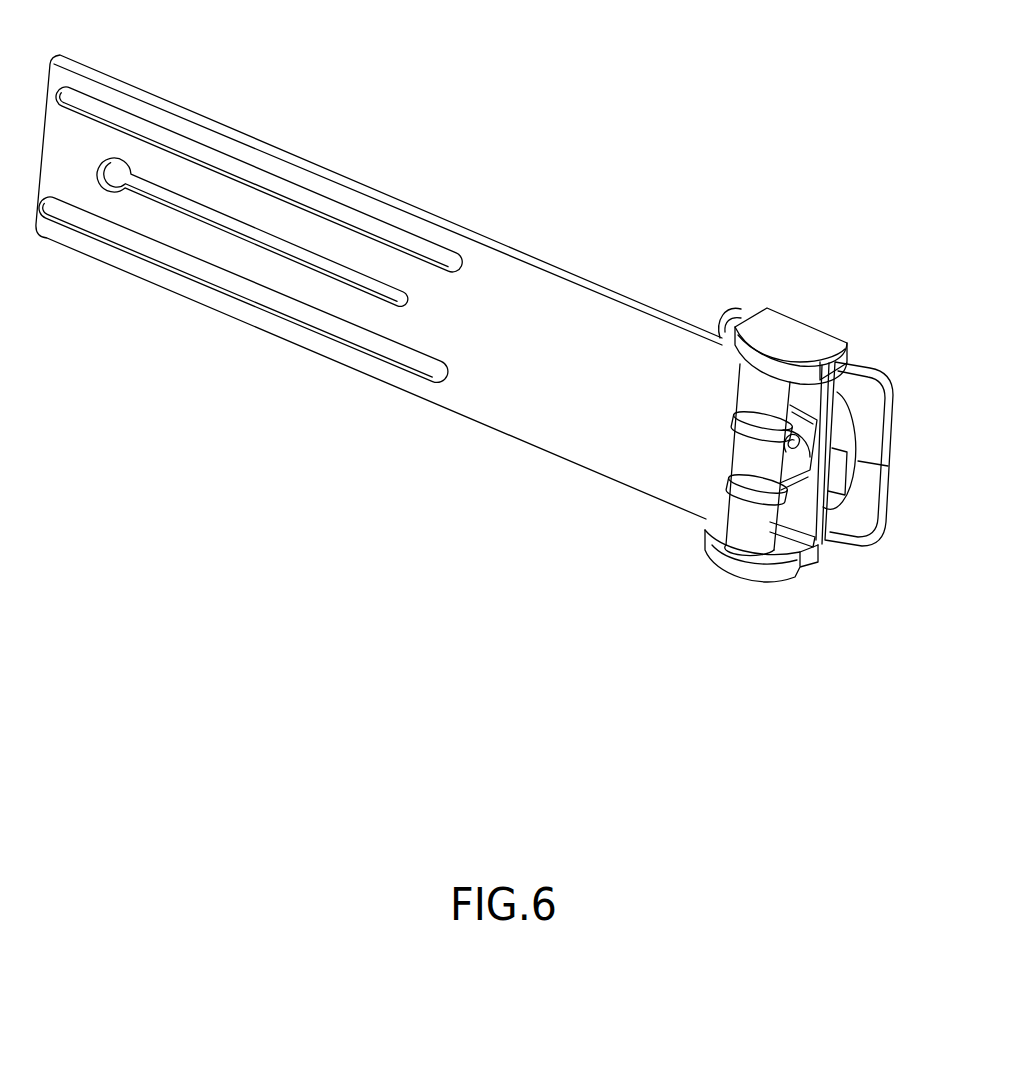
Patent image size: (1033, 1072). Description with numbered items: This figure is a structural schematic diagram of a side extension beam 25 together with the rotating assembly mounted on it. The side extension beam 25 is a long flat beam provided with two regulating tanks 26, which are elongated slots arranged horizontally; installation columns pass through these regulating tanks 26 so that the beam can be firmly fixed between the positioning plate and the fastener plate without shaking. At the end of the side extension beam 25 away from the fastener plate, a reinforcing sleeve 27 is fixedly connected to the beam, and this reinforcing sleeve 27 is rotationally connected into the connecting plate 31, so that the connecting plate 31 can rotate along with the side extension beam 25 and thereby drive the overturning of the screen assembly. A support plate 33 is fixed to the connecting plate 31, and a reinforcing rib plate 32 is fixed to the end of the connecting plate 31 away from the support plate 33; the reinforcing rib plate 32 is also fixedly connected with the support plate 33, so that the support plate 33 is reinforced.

The side extension beam 25 is at (283, 167).
The regulating tank 26 is at (253, 283).
The reinforcing sleeve 27 is at (753, 518).
The connecting plate 31 is at (777, 340).
The reinforcing rib plate 32 is at (780, 480).
The support plate 33 is at (858, 388).